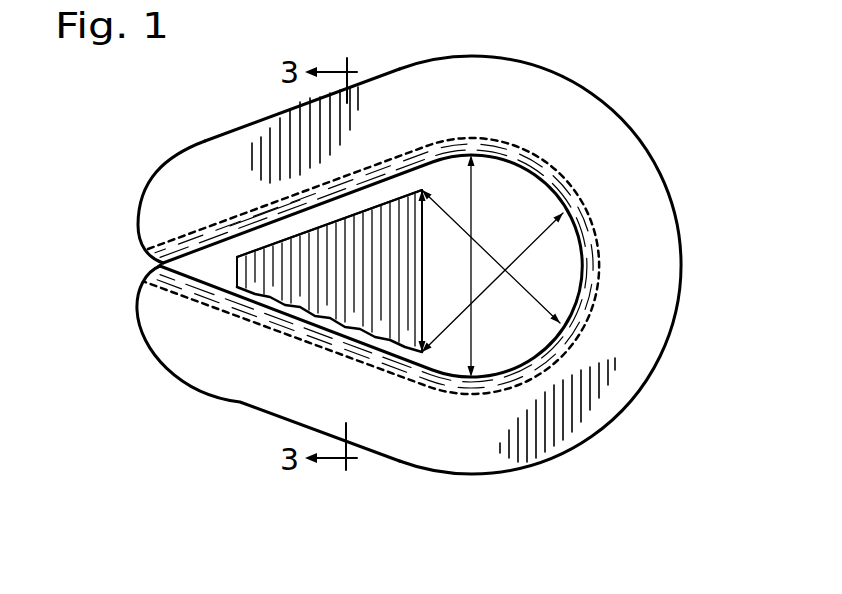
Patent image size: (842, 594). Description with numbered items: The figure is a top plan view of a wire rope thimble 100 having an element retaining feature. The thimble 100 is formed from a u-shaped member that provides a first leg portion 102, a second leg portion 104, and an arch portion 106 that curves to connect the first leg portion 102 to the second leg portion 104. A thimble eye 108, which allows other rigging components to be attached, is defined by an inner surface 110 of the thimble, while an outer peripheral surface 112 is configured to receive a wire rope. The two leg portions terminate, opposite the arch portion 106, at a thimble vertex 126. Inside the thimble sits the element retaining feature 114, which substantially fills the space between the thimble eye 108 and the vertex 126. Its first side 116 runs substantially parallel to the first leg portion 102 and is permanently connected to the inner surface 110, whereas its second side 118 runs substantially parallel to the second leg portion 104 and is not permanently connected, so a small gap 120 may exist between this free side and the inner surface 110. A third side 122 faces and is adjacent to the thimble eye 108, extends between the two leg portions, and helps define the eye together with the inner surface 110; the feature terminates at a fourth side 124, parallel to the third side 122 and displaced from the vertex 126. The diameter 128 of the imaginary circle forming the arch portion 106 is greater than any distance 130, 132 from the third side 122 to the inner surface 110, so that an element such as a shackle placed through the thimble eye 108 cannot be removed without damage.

The wire rope thimble 100 is at (409, 250).
The first leg portion 102 is at (263, 397).
The second leg portion 104 is at (403, 87).
The arch portion 106 is at (656, 211).
The thimble eye 108 is at (528, 208).
The inner surface 110 is at (574, 278).
The outer peripheral surface 112 is at (220, 138).
The element retaining feature 114 is at (321, 269).
The first side 116 is at (410, 315).
The second side 118 is at (405, 193).
The gap 120 is at (262, 220).
The third side 122 is at (423, 223).
The fourth side 124 is at (237, 268).
The thimble vertex 126 is at (145, 246).
The diameter 128 is at (472, 228).
The distance 130 is at (527, 290).
The distance 132 is at (424, 320).